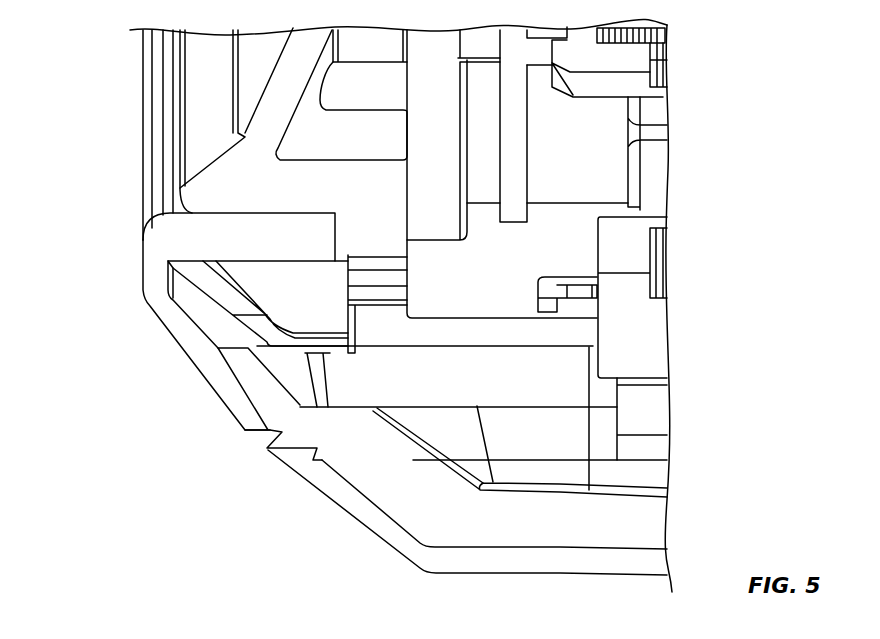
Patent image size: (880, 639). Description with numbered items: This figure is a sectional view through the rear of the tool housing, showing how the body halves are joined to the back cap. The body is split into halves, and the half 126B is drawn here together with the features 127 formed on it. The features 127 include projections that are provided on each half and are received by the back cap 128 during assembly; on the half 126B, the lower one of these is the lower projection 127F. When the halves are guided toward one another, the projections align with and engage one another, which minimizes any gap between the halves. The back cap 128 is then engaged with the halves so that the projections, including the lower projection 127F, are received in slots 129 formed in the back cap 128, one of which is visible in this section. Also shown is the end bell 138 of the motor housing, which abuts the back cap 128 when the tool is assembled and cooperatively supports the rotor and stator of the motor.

The half 126B is at (343, 505).
The features 127 is at (178, 120).
The lower projection 127F is at (265, 390).
The back cap 128 is at (170, 248).
The slots 129 is at (222, 333).
The end bell 138 is at (435, 50).